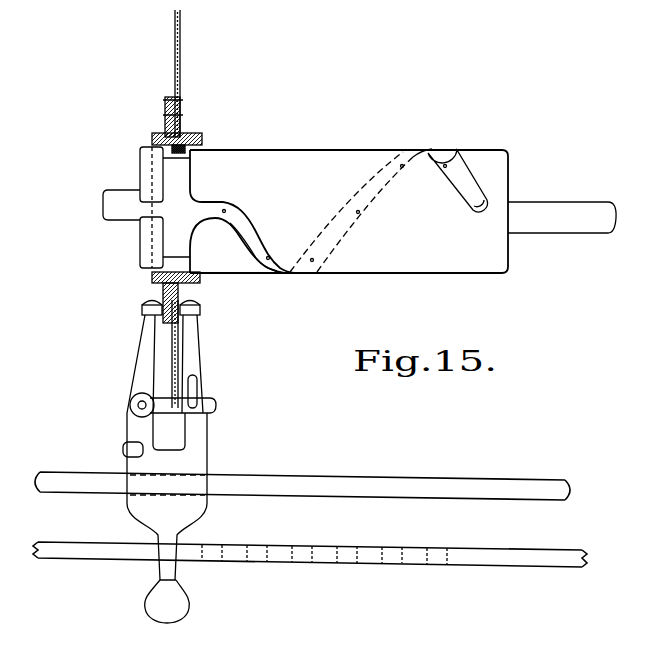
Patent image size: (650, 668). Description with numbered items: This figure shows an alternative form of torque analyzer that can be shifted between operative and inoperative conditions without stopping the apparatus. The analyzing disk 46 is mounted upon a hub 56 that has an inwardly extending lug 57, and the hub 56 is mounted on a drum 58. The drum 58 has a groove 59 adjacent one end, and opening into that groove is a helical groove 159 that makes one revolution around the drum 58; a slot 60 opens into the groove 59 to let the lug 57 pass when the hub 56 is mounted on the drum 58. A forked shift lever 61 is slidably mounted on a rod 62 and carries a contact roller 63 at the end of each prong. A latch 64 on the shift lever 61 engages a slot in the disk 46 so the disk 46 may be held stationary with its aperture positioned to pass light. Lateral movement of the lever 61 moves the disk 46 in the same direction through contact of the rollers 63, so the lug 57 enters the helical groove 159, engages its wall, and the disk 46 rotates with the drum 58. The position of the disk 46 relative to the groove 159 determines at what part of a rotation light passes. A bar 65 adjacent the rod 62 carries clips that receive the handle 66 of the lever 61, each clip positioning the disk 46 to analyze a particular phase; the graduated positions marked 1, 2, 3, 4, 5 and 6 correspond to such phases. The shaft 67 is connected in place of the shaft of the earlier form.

The analyzing disk 46 is at (180, 59).
The hub 56 is at (188, 135).
The lug 57 is at (187, 152).
The drum 58 is at (303, 157).
The groove 59 is at (165, 174).
The slot 60 is at (150, 207).
The forked shift lever 61 is at (193, 461).
The rod 62 is at (262, 481).
The contact roller 63 is at (141, 307).
The latch 64 is at (205, 410).
The bar 65 is at (468, 555).
The handle 66 is at (173, 602).
The shaft 67 is at (530, 210).
The helical groove 159 is at (462, 184).
The cam track position 1 is at (228, 209).
The cam track position 2 is at (271, 256).
The cam track position 3 is at (313, 257).
The cam track position 4 is at (356, 210).
The cam track position 5 is at (399, 166).
The cam track position 6 is at (443, 168).